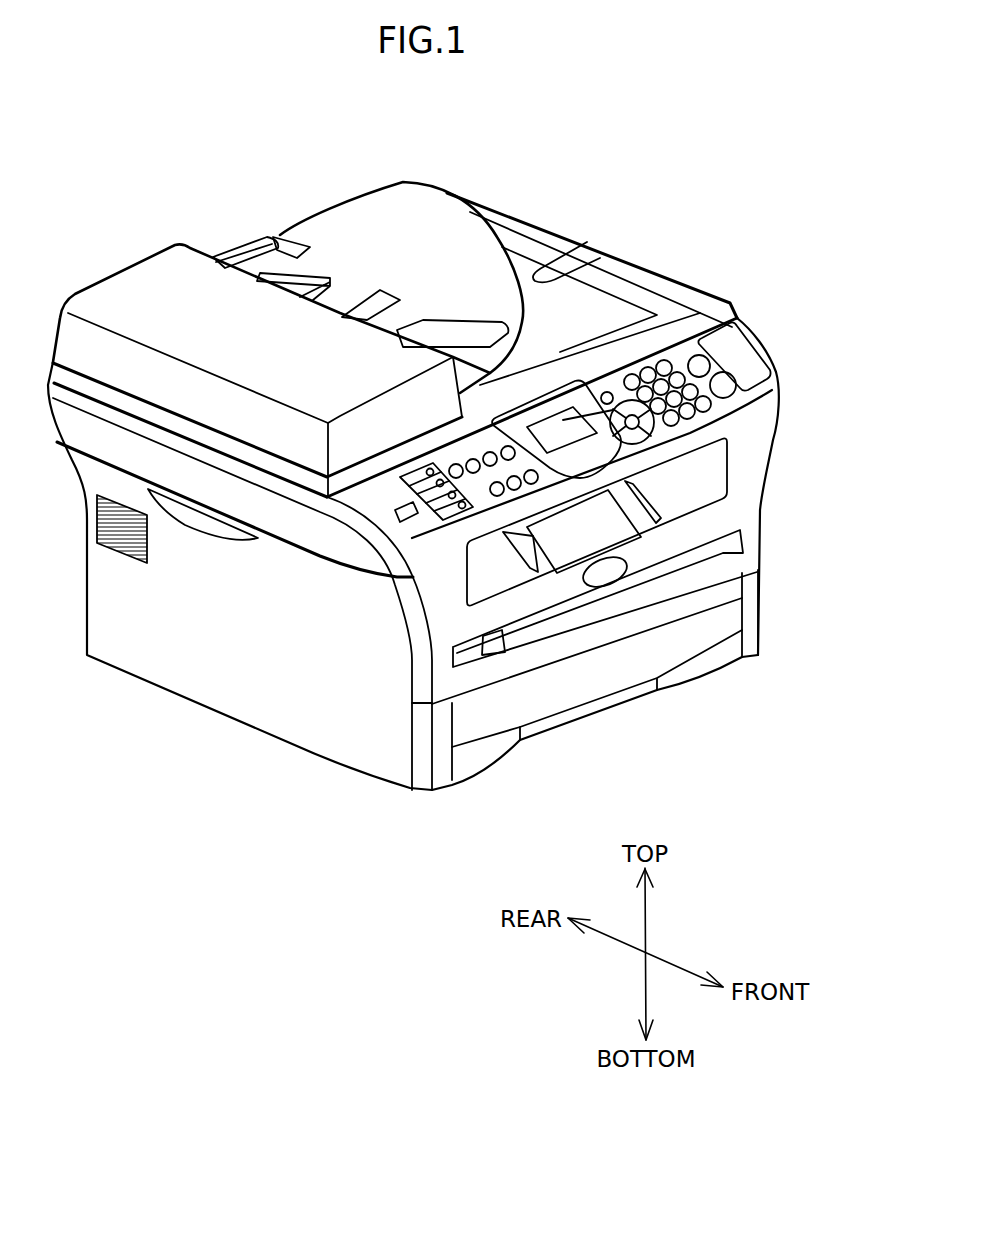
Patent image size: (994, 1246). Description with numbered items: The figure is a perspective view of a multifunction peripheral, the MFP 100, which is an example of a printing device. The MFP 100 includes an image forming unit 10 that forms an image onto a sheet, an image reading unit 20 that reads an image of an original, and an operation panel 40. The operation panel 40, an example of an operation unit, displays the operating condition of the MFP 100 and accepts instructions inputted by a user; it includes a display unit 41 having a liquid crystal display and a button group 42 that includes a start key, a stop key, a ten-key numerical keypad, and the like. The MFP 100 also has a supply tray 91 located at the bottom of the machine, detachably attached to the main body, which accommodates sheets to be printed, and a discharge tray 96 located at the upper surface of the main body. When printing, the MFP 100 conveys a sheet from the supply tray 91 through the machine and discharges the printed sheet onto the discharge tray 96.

The MFP 100 is at (665, 192).
The image forming unit 10 is at (445, 576).
The image reading unit 20 is at (122, 293).
The operation panel 40 is at (650, 422).
The display unit 41 is at (685, 421).
The button group 42 is at (722, 385).
The supply tray 91 is at (688, 633).
The discharge tray 96 is at (680, 492).